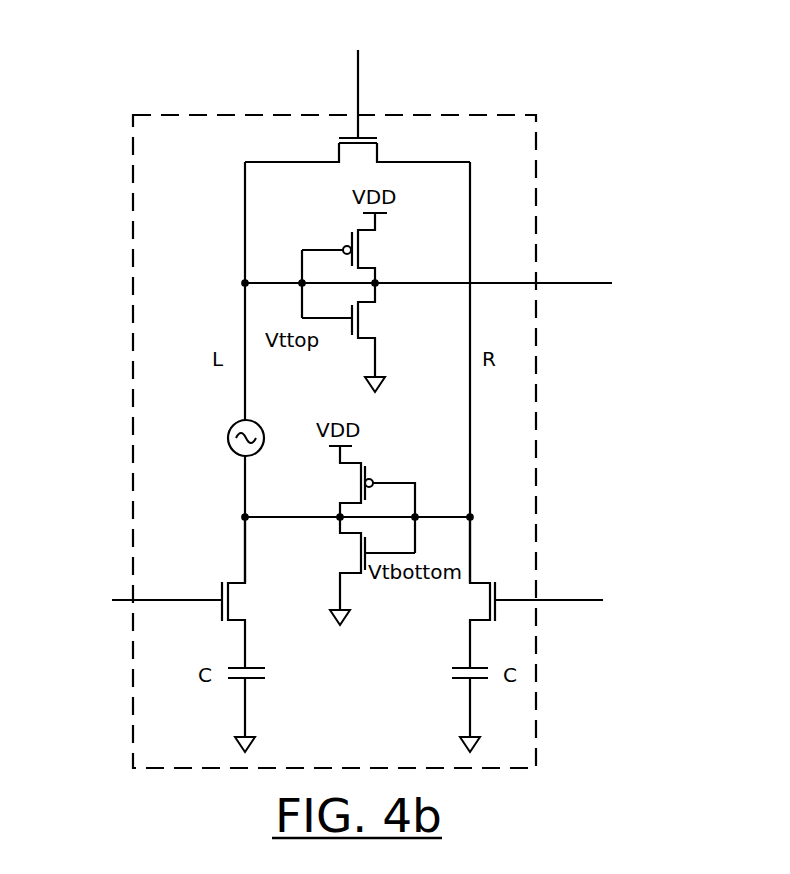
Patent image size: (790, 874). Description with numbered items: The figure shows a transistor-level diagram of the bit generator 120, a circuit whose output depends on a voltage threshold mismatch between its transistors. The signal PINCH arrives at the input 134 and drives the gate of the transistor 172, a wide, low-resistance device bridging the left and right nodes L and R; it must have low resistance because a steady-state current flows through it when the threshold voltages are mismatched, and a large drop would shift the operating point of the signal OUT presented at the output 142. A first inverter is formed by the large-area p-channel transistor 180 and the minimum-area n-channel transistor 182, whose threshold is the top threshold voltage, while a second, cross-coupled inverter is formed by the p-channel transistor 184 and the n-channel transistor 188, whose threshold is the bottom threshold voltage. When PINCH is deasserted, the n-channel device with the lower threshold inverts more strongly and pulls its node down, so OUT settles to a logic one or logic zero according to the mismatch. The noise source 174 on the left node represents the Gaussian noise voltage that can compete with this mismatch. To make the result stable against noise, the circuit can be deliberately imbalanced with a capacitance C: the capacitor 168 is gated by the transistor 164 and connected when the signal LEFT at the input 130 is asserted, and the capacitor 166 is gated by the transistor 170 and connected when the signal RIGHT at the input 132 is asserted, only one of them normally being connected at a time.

The bit generator circuit 120 is at (185, 115).
The input 134 is at (357, 115).
The transistor 172 is at (332, 148).
The transistor 180 is at (376, 248).
The transistor 182 is at (376, 313).
The output 142 is at (537, 285).
The noise source 174 is at (228, 436).
The transistor 184 is at (340, 479).
The transistor 188 is at (340, 553).
The input 130 is at (135, 598).
The input 132 is at (536, 600).
The transistor 164 is at (243, 602).
The transistor 170 is at (470, 601).
The capacitor 168 is at (267, 675).
The capacitor 166 is at (450, 671).